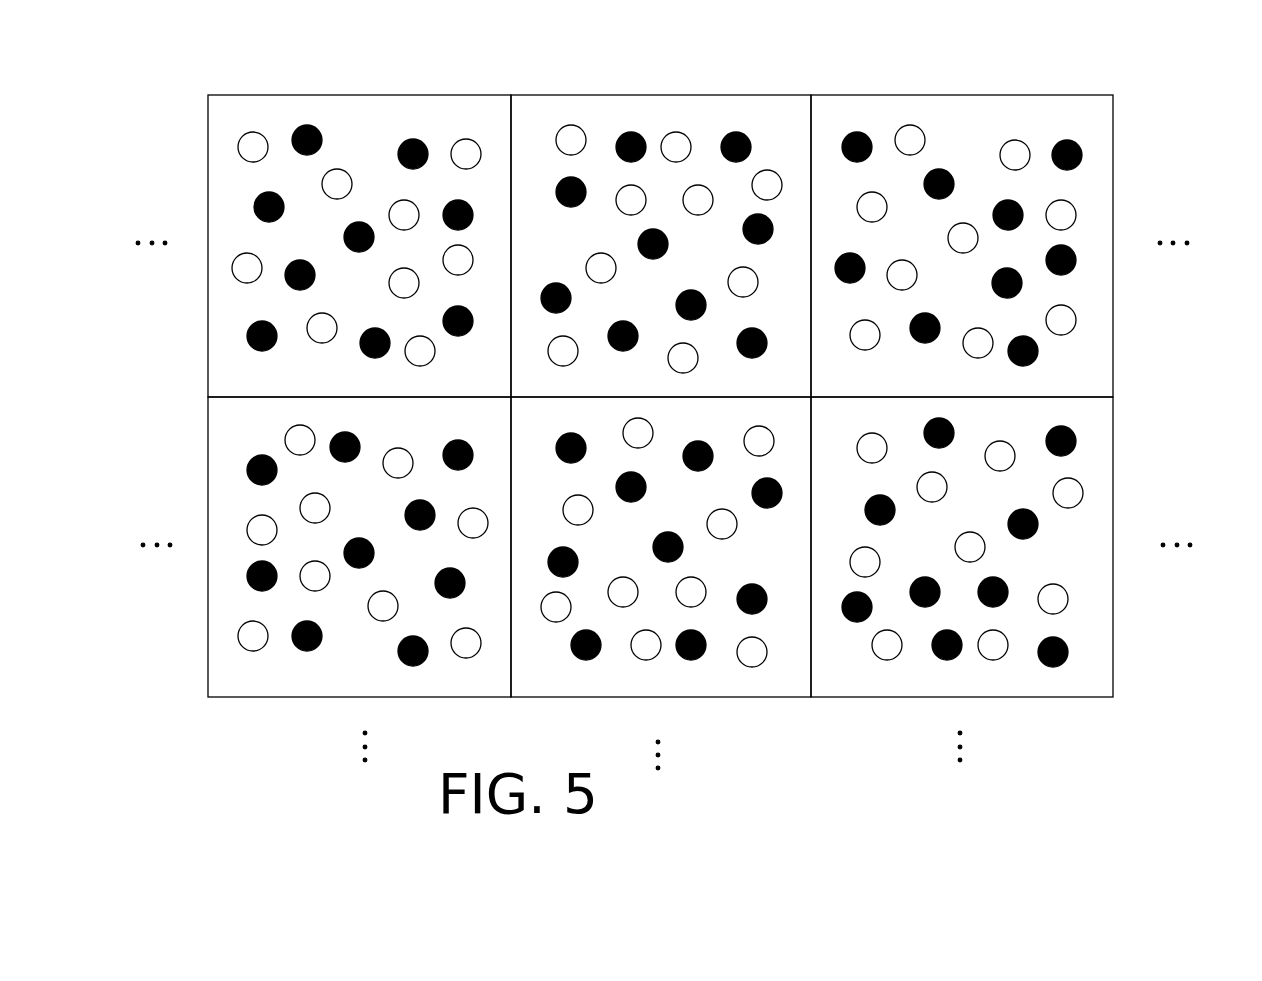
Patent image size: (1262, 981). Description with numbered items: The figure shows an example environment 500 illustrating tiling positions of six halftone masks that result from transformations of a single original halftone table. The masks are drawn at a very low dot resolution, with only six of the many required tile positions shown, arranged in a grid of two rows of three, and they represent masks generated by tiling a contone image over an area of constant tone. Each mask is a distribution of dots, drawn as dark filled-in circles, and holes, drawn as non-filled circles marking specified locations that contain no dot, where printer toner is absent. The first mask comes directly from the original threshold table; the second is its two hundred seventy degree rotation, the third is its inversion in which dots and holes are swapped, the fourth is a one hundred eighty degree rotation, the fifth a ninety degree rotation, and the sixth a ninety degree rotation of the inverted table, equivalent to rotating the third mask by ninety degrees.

The example environment 500 is at (1186, 60).